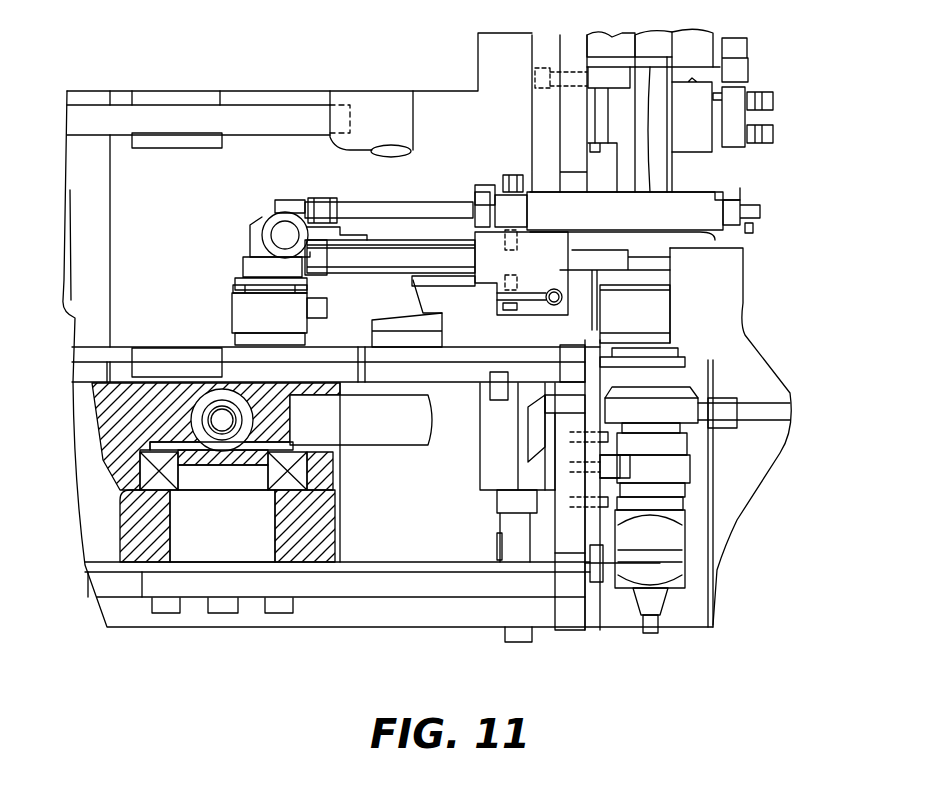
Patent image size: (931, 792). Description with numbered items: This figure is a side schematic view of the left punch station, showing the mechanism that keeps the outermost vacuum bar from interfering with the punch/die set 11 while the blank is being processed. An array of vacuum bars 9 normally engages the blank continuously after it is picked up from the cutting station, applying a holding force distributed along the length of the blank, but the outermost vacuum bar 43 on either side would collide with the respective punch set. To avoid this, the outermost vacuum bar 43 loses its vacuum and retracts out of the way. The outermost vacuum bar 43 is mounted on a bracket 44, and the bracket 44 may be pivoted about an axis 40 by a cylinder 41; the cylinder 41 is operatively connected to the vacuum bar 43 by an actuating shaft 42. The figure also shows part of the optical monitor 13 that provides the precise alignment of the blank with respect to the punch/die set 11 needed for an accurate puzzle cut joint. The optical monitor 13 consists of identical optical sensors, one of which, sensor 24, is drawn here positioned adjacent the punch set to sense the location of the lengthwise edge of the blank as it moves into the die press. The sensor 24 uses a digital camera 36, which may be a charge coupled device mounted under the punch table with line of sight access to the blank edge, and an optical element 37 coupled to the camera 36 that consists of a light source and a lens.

The punch/die set 11 is at (268, 81).
The actuating shaft 42 is at (418, 212).
The cylinder 41 is at (702, 193).
The outermost vacuum bar 43 is at (238, 313).
The bracket 44 is at (485, 258).
The axis 40 is at (546, 305).
The vacuum bar 9 is at (433, 325).
The optical element 37 is at (677, 403).
The optical sensor 24 is at (697, 476).
The digital camera 36 is at (665, 548).
The optical monitor 13 is at (798, 392).